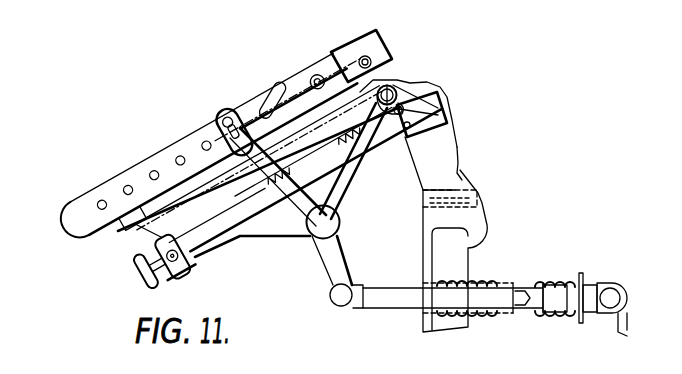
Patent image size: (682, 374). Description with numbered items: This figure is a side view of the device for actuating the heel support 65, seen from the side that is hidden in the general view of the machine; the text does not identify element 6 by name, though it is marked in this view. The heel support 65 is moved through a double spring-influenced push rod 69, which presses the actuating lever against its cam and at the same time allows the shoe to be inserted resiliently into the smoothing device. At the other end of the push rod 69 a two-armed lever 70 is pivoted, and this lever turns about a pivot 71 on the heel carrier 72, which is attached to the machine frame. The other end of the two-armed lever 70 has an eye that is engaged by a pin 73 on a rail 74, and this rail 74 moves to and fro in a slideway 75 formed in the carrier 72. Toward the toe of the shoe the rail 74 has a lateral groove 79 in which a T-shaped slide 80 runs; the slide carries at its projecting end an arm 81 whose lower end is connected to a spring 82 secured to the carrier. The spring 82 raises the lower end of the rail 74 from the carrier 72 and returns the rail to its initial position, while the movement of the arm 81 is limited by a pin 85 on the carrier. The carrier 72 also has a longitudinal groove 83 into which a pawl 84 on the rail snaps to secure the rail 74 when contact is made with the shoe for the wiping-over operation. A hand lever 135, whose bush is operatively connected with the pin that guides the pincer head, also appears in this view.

The arm 6 is at (63, 212).
The heel-support 65 is at (143, 183).
The double spring-influenced push rod 69 is at (498, 281).
The two-armed lever 70 is at (327, 267).
The pivot 71 is at (324, 221).
The heel carrier 72 is at (282, 223).
The pin 73 is at (222, 119).
The rail 74 is at (177, 152).
The slideway 75 is at (200, 232).
The lateral groove 79 is at (385, 40).
The T-shaped slide 80 is at (333, 50).
The arm 81 is at (390, 76).
The spring 82 is at (242, 107).
The longitudinal groove 83 is at (115, 207).
The pawl 84 is at (112, 219).
The pin 85 is at (297, 90).
The hand lever 135 is at (413, 83).